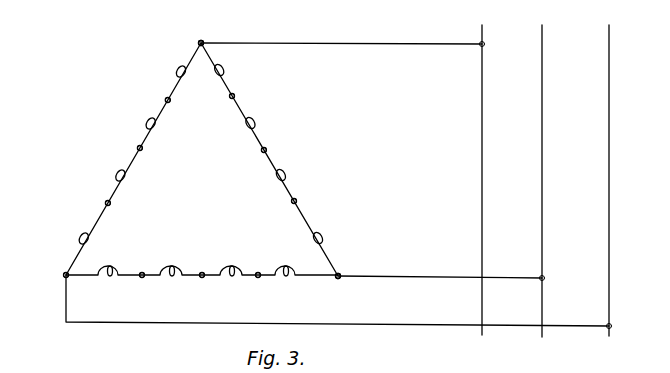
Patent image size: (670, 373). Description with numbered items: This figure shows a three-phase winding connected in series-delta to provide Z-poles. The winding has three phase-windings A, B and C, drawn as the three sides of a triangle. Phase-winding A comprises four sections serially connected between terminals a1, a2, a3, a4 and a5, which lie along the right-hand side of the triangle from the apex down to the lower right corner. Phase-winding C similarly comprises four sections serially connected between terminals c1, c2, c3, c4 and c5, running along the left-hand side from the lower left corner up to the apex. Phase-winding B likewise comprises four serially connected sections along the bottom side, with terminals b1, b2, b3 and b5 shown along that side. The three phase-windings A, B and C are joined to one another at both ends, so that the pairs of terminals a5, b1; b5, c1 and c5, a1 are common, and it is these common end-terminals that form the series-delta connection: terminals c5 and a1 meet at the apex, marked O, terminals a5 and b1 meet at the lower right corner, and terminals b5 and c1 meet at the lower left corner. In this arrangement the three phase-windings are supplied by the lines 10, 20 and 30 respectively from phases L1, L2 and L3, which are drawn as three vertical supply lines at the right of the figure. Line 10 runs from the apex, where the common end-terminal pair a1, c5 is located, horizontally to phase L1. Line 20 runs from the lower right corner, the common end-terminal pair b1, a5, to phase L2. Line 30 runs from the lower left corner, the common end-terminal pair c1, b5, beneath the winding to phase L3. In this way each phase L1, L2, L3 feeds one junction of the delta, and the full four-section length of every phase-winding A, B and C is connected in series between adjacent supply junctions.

The terminal of phase-winding A a1 is at (201, 43).
The terminal of phase-winding A a2 is at (233, 96).
The terminal of phase-winding A a3 is at (264, 150).
The terminal of phase-winding A a4 is at (295, 201).
The terminal of phase-winding A a5 is at (339, 276).
The terminal of phase-winding B b1 is at (338, 278).
The terminal of phase-winding B b2 is at (258, 276).
The terminal of phase-winding B b3 is at (202, 276).
The terminal of phase-winding B b5 is at (142, 276).
The terminal of phase-winding C c1 is at (65, 274).
The terminal of phase-winding C c2 is at (107, 203).
The terminal of phase-winding C c3 is at (139, 148).
The terminal of phase-winding C c4 is at (167, 100).
The terminal of phase-winding C c5 is at (200, 43).
The phase-winding A is at (330, 150).
The phase-winding B is at (172, 353).
The phase-winding C is at (75, 145).
The delta connection point O is at (299, 9).
The line 10 is at (405, 44).
The line 20 is at (424, 278).
The line 30 is at (439, 315).
The phase L1 is at (482, 170).
The phase L2 is at (540, 171).
The phase L3 is at (605, 168).